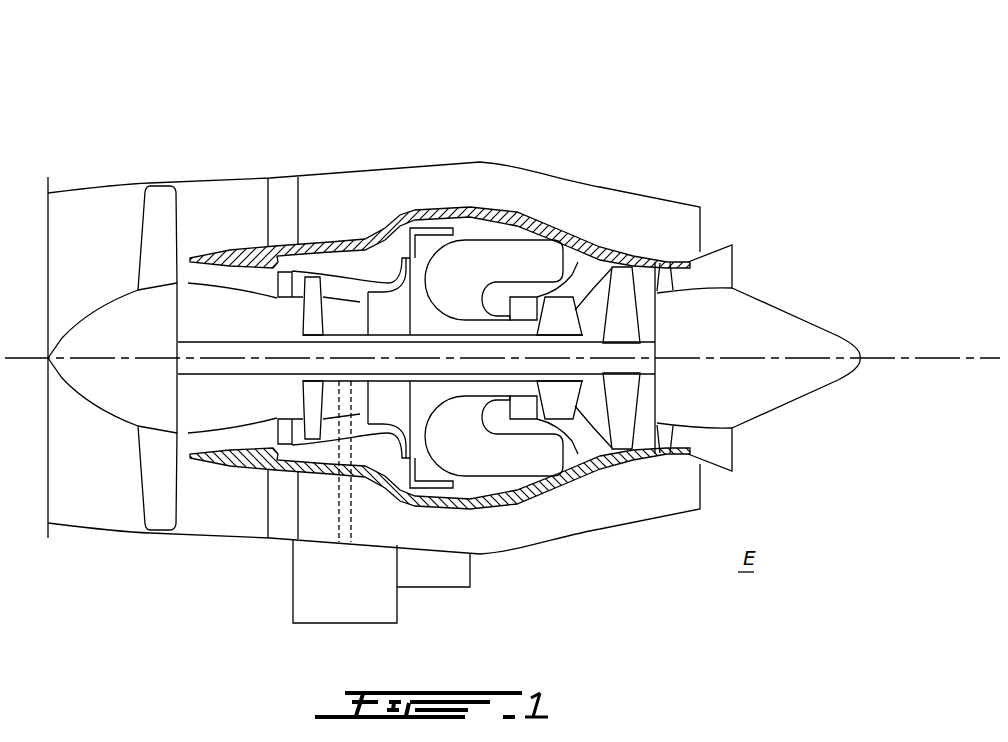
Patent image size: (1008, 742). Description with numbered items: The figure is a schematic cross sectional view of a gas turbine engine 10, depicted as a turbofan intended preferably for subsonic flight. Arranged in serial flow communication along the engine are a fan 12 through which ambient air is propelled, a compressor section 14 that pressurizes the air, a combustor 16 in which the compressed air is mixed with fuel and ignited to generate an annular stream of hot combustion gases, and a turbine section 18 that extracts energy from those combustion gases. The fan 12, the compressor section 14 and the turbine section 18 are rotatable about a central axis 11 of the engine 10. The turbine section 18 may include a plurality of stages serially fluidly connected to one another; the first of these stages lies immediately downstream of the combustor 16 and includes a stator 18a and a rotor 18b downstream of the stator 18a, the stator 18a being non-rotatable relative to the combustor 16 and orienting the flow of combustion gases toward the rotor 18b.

The gas turbine engine 10 is at (581, 102).
The central axis 11 is at (887, 357).
The fan 12 is at (155, 467).
The compressor section 14 is at (340, 288).
The combustor 16 is at (497, 257).
The turbine section 18 is at (589, 405).
The stator 18a is at (523, 403).
The rotor 18b is at (560, 316).